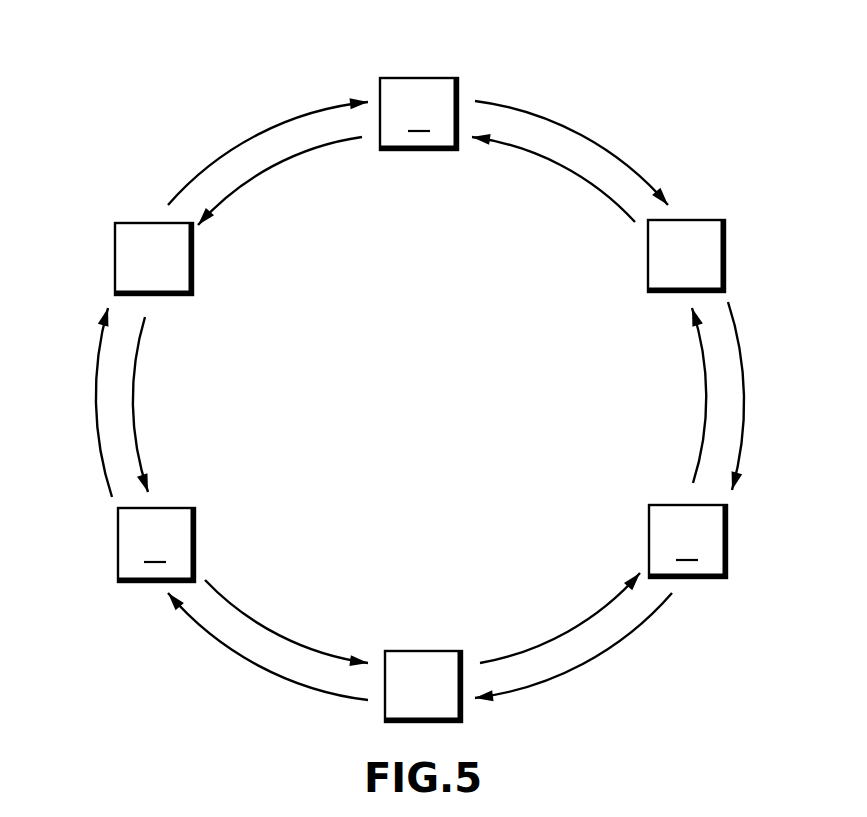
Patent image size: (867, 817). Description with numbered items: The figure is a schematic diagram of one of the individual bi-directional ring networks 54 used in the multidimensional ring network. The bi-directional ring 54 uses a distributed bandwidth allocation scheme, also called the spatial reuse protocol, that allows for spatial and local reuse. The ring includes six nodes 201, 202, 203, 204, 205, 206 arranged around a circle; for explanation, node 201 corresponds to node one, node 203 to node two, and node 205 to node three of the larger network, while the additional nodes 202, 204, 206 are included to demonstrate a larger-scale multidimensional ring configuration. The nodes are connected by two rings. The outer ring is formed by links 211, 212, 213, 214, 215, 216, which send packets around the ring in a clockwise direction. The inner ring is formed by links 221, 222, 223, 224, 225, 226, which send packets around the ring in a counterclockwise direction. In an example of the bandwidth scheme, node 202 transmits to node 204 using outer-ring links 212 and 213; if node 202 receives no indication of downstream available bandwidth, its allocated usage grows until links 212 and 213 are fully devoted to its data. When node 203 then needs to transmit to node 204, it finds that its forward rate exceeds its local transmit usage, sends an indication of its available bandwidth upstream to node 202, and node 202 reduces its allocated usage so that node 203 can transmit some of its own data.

The bi-directional ring network 54 is at (168, 85).
The node 201 is at (420, 78).
The node 202 is at (725, 258).
The node 203 is at (727, 542).
The node 204 is at (422, 651).
The node 205 is at (118, 545).
The node 206 is at (115, 258).
The link 211 is at (597, 146).
The link 212 is at (750, 398).
The link 213 is at (605, 655).
The link 214 is at (243, 658).
The link 215 is at (95, 400).
The link 216 is at (244, 147).
The link 221 is at (272, 175).
The link 222 is at (132, 400).
The link 223 is at (282, 633).
The link 224 is at (568, 630).
The link 225 is at (709, 398).
The link 226 is at (566, 172).